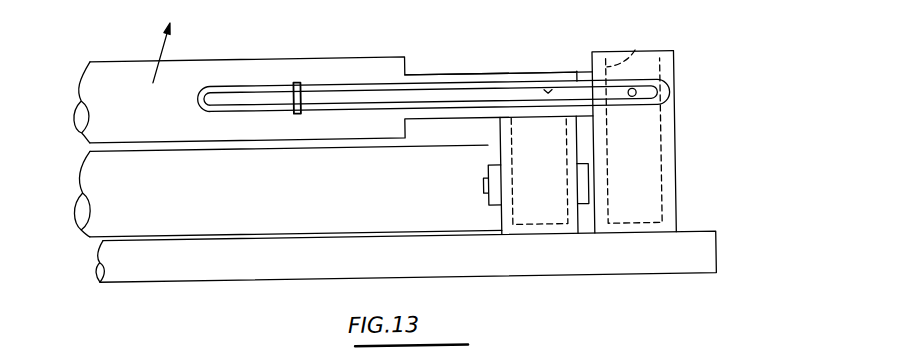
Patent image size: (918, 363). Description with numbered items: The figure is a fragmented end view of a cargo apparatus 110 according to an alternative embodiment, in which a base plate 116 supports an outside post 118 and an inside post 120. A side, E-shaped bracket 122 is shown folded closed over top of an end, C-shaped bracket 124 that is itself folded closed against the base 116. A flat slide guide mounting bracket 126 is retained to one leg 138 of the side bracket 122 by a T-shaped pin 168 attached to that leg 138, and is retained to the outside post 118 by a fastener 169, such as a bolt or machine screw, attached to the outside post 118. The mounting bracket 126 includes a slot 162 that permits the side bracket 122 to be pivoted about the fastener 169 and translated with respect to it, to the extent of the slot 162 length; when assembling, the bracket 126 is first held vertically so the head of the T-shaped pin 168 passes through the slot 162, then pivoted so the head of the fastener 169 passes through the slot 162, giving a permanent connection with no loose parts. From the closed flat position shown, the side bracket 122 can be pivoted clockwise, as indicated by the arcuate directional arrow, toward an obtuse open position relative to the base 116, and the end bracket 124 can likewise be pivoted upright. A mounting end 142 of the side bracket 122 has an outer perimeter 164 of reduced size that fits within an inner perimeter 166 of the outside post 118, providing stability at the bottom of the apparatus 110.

The cargo apparatus 110 is at (752, 84).
The base plate 116 is at (705, 262).
The outside post 118 is at (684, 219).
The inside post 120 is at (546, 246).
The side bracket 122 is at (360, 72).
The end bracket 124 is at (312, 242).
The slide guide mounting bracket 126 is at (468, 65).
The leg 138 is at (198, 55).
The mounting end 142 is at (579, 71).
The slot 162 is at (549, 94).
The outer perimeter 164 is at (459, 69).
The inner perimeter 166 is at (675, 118).
The T-shaped pin 168 is at (301, 81).
The fastener 169 is at (633, 92).